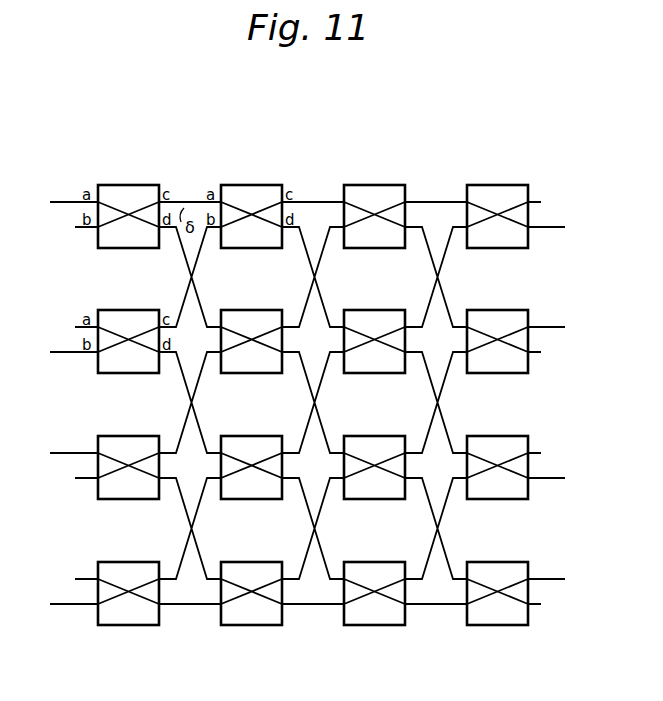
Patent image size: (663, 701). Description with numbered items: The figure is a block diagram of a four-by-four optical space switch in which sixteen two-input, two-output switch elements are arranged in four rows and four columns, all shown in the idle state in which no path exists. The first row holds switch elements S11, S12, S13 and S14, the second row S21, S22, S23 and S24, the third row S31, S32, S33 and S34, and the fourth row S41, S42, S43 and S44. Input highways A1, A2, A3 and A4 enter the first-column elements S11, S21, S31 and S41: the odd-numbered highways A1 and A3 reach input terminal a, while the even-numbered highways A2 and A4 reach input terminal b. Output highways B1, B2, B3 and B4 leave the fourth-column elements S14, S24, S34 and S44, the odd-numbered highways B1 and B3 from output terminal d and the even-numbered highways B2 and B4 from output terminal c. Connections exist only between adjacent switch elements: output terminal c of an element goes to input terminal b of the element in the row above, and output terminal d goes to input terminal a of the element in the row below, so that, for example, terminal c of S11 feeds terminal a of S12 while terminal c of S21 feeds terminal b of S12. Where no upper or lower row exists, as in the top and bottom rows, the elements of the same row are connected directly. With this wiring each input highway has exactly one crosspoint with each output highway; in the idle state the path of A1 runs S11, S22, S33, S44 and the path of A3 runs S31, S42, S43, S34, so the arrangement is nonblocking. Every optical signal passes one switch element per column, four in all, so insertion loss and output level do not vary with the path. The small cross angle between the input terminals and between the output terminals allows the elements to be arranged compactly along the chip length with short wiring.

The switch element S11 is at (128, 203).
The switch element S12 is at (251, 203).
The switch element S13 is at (374, 203).
The switch element S14 is at (497, 203).
The switch element S21 is at (128, 328).
The switch element S22 is at (251, 328).
The switch element S23 is at (374, 328).
The switch element S24 is at (497, 328).
The switch element S31 is at (128, 454).
The switch element S32 is at (251, 454).
The switch element S33 is at (374, 454).
The switch element S34 is at (497, 454).
The switch element S41 is at (128, 580).
The switch element S42 is at (251, 580).
The switch element S43 is at (374, 580).
The switch element S44 is at (497, 580).
The input highway A1 is at (59, 202).
The input highway A2 is at (59, 352).
The input highway A3 is at (59, 453).
The input highway A4 is at (59, 604).
The output highway B1 is at (562, 227).
The output highway B2 is at (562, 327).
The output highway B3 is at (562, 478).
The output highway B4 is at (562, 579).